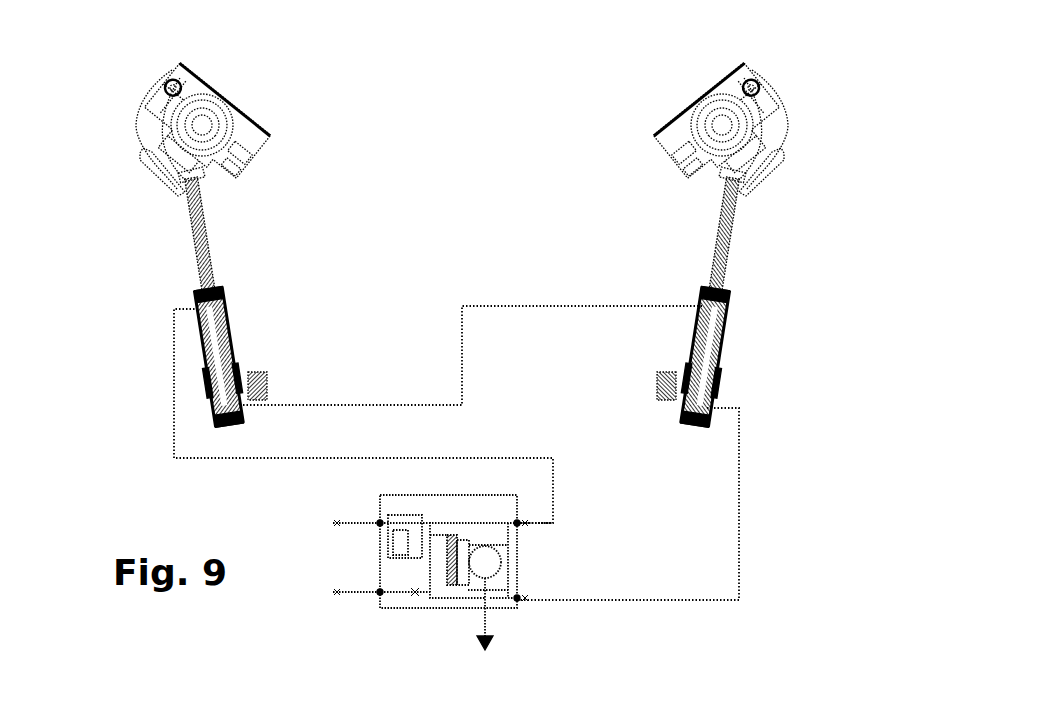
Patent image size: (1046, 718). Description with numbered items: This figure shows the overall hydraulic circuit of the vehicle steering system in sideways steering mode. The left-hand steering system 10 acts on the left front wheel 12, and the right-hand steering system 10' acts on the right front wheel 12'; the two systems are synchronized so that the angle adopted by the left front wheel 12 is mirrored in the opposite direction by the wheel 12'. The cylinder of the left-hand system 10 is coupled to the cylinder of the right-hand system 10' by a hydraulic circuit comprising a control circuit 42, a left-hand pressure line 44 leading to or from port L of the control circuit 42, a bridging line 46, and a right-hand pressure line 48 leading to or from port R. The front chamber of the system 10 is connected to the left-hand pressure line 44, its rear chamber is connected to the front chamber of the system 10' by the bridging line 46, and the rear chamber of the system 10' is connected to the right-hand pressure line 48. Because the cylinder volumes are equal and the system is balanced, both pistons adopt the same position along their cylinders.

The left-hand steering system 10 is at (219, 232).
The right-hand steering system 10' is at (715, 240).
The left front wheel 12 is at (200, 117).
The right front wheel 12' is at (723, 125).
The control circuit 42 is at (438, 626).
The left-hand pressure line 44 is at (174, 410).
The bridging line 46 is at (462, 368).
The right-hand pressure line 48 is at (740, 562).